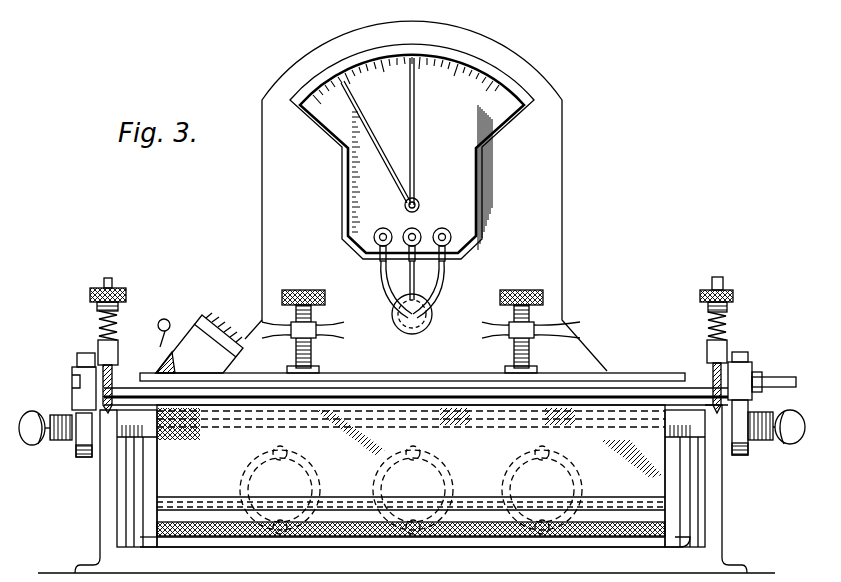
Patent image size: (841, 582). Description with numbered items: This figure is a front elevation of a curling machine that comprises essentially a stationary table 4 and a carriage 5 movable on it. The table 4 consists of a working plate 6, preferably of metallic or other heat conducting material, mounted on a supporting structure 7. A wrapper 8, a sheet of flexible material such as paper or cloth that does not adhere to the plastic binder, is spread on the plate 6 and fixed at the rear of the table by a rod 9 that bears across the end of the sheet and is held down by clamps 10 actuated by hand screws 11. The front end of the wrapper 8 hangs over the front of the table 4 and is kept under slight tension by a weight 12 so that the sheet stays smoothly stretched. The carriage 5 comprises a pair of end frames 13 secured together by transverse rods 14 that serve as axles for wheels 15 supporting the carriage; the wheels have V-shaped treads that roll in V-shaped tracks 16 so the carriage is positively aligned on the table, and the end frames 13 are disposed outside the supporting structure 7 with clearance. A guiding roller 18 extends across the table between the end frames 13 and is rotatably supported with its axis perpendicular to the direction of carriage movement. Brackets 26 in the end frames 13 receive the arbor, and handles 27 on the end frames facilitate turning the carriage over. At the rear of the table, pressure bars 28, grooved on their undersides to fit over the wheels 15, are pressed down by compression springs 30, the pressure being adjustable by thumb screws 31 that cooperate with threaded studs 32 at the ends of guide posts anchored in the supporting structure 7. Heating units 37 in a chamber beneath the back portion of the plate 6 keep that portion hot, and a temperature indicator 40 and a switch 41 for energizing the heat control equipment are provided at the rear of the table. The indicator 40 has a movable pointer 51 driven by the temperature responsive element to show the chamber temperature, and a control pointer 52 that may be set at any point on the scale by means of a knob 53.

The stationary table 4 is at (108, 488).
The carriage 5 is at (64, 381).
The working plate 6 is at (133, 410).
The supporting structure 7 is at (103, 527).
The wrapper 8 is at (220, 465).
The rod 9 is at (623, 373).
The clamps 10 is at (319, 373).
The hand screws 11 is at (303, 290).
The weight 12 is at (158, 530).
The end frames 13 is at (77, 356).
The transverse rods 14 is at (425, 390).
The wheels 15 is at (112, 370).
The V-shaped tracks 16 is at (84, 457).
The guiding roller 18 is at (770, 377).
The brackets 26 is at (55, 418).
The handles 27 is at (32, 445).
The pressure bars 28 is at (98, 345).
The compression springs 30 is at (118, 322).
The thumb screws 31 is at (92, 290).
The threaded studs 32 is at (108, 278).
The heating units 37 is at (522, 460).
The temperature indicator 40 is at (565, 157).
The switch 41 is at (207, 315).
The movable pointer 51 is at (372, 147).
The control pointer 52 is at (415, 130).
The knob 53 is at (404, 205).